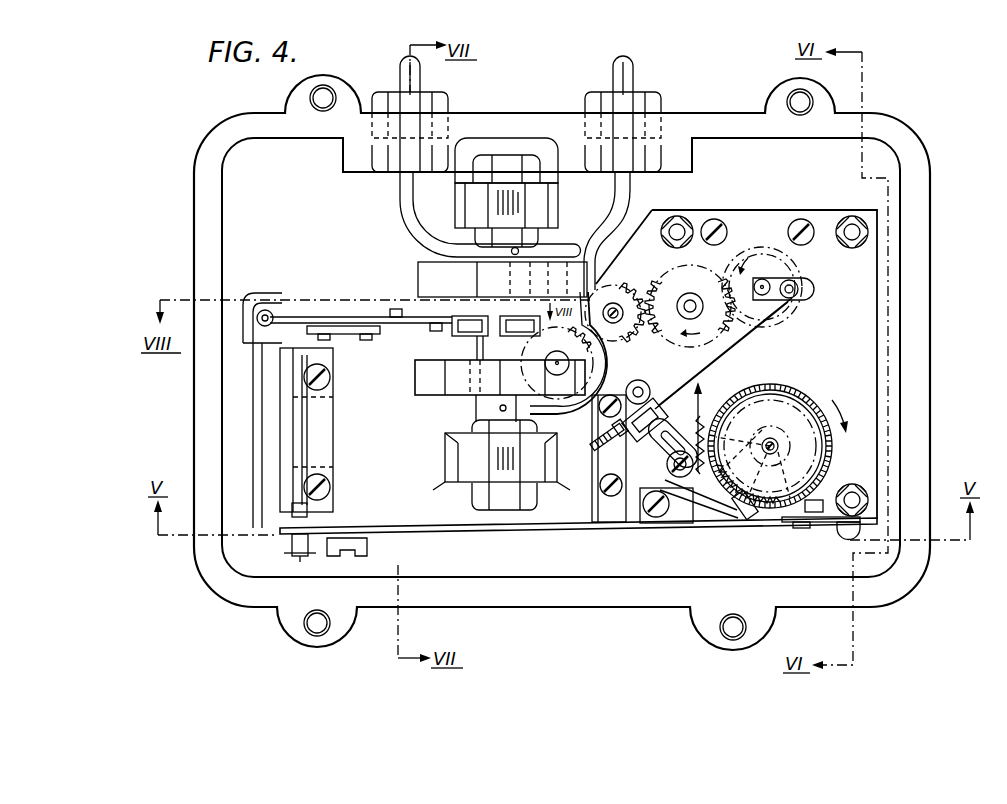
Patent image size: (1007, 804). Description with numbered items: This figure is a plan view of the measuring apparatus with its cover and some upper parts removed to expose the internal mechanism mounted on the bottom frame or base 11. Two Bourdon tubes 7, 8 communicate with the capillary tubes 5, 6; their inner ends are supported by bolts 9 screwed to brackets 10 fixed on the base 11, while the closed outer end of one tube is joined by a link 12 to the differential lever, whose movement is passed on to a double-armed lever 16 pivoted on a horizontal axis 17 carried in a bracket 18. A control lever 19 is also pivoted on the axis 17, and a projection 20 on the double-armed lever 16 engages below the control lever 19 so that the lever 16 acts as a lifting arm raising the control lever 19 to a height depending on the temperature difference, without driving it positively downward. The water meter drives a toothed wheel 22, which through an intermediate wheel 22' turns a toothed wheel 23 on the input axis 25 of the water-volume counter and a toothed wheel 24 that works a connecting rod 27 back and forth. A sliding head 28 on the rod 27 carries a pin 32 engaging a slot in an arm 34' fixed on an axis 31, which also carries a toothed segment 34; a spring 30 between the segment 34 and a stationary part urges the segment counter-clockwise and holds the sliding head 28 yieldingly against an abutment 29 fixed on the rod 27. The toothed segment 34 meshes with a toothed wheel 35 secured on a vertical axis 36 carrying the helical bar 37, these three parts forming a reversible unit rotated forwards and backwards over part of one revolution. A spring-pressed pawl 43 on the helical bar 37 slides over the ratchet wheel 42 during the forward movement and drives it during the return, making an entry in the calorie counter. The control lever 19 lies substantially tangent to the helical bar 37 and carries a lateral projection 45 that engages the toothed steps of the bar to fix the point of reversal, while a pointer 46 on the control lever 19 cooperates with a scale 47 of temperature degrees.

The capillary tube 5 is at (632, 72).
The capillary tube 6 is at (405, 72).
The Bourdon tube 7 is at (427, 371).
The Bourdon tube 8 is at (421, 280).
The bolt 9 is at (498, 210).
The bracket 10 is at (535, 197).
The base 11 is at (536, 600).
The link 12 is at (365, 316).
The double-armed lever 16 is at (265, 292).
The horizontal axis 17 is at (300, 433).
The bracket 18 is at (322, 470).
The control lever 19 is at (450, 534).
The projection 20 is at (370, 546).
The toothed wheel 22 is at (550, 353).
The intermediate wheel 22' is at (627, 325).
The toothed wheel 23 is at (705, 278).
The toothed wheel 24 is at (792, 266).
The input axis 25 is at (687, 303).
The connecting rod 27 is at (724, 347).
The sliding head 28 is at (627, 437).
The abutment 29 is at (612, 428).
The spring 30 is at (700, 416).
The axis 31 is at (679, 478).
The pin 32 is at (657, 403).
The toothed segment 34 is at (699, 525).
The arm 34' is at (665, 448).
The toothed wheel 35 is at (762, 438).
The vertical axis 36 is at (779, 444).
The helical bar 37 is at (797, 388).
The ratchet wheel 42 is at (811, 400).
The spring-pressed pawl 43 is at (740, 500).
The lateral projection 45 is at (815, 504).
The pointer 46 is at (797, 528).
The scale 47 is at (826, 522).